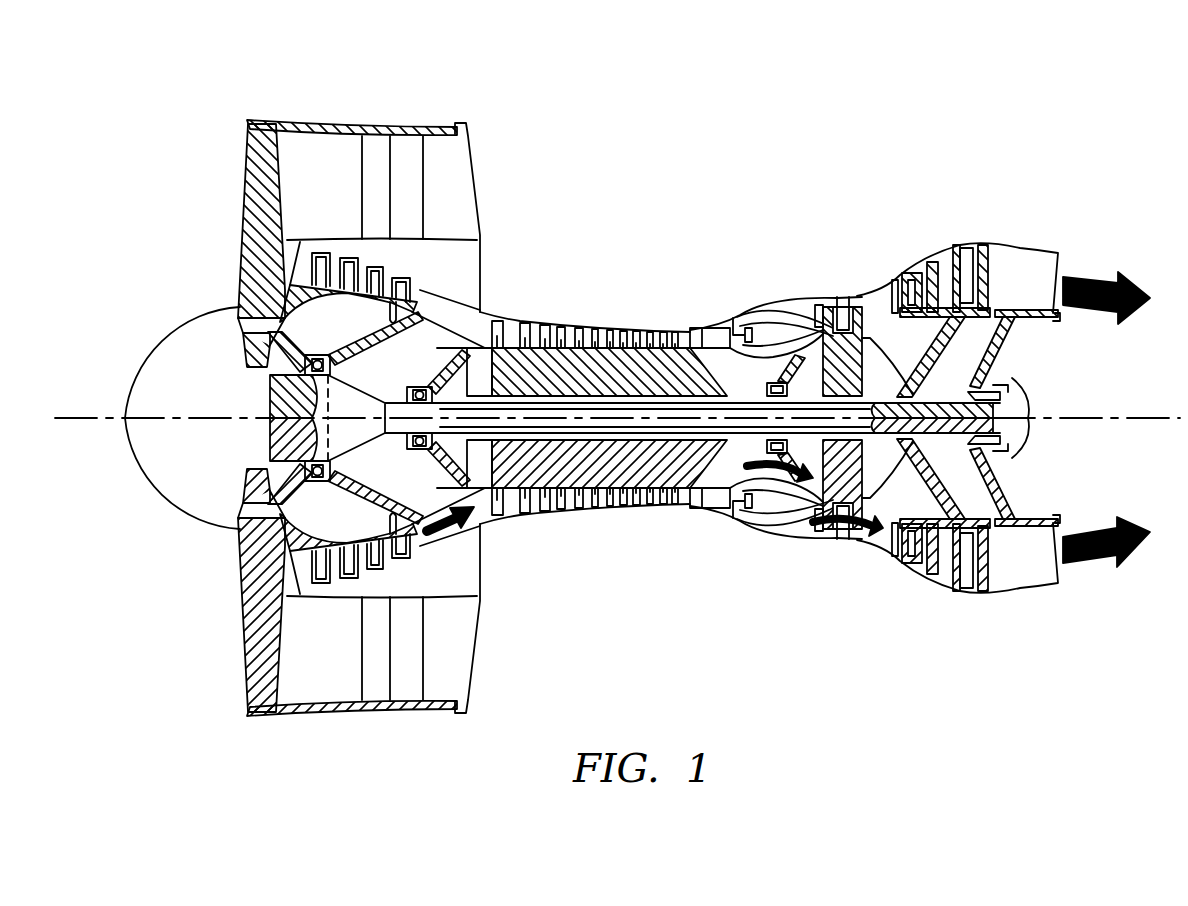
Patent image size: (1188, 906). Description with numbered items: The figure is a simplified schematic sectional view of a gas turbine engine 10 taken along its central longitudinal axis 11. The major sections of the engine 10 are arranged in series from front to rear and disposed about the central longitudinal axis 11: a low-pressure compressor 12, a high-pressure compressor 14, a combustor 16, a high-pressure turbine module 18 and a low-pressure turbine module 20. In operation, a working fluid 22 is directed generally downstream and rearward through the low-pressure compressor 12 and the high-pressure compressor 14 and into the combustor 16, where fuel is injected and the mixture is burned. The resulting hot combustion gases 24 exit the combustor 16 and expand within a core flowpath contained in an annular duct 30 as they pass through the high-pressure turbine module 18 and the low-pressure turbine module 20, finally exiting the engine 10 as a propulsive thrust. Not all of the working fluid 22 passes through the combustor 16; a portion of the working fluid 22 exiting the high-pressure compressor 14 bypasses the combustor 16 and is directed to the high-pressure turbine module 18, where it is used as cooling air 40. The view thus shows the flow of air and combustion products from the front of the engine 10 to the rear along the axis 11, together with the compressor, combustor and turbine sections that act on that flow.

The gas turbine engine 10 is at (820, 124).
The central longitudinal axis 11 is at (90, 416).
The low-pressure compressor 12 is at (414, 103).
The high-pressure compressor 14 is at (534, 282).
The combustor 16 is at (758, 287).
The high-pressure turbine module 18 is at (845, 276).
The low-pressure turbine module 20 is at (955, 229).
The working fluid 22 is at (450, 530).
The hot combustion gases 24 is at (863, 535).
The annular duct 30 is at (893, 325).
The cooling air 40 is at (757, 470).